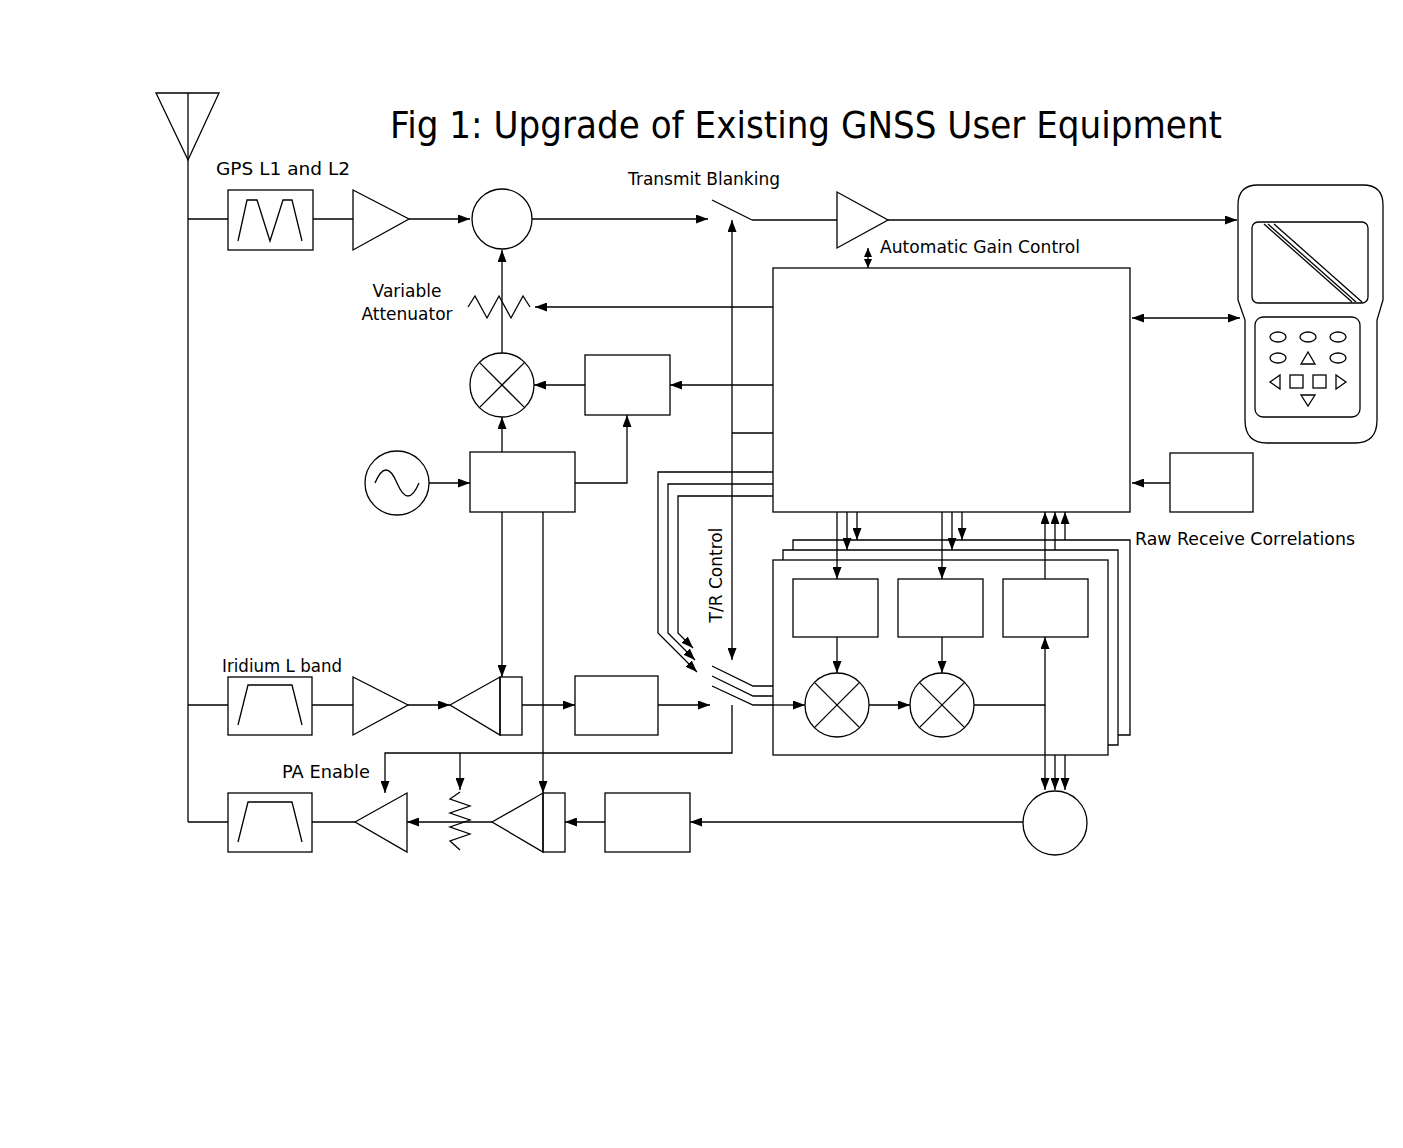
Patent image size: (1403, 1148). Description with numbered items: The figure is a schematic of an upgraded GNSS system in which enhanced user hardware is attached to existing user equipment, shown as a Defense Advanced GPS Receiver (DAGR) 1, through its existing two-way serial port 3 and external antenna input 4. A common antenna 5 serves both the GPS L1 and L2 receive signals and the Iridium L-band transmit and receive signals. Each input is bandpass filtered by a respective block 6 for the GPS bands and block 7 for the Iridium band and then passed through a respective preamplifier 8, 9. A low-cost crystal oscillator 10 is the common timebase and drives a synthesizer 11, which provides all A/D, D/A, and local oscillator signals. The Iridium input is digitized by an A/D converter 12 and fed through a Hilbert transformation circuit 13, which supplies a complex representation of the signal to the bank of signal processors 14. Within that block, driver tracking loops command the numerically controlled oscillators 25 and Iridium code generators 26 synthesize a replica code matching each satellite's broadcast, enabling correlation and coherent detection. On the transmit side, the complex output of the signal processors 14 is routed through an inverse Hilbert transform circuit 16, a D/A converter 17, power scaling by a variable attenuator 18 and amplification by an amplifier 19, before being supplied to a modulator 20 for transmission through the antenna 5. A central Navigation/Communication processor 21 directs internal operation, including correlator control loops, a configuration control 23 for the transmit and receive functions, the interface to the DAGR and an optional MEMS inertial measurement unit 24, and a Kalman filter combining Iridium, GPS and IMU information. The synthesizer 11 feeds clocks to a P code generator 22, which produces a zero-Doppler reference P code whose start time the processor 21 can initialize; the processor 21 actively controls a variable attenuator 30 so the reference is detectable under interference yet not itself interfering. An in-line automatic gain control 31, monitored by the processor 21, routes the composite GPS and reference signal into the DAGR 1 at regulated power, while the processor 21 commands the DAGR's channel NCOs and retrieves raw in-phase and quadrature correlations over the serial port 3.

The Defense Advanced GPS Receiver (DAGR) 1 is at (1310, 170).
The two-way serial port 3 is at (1237, 330).
The external antenna input 4 is at (1226, 210).
The common antenna 5 is at (208, 123).
The bandpass filter 6 is at (280, 238).
The bandpass filter 7 is at (258, 722).
The preamplifier 8 is at (375, 228).
The preamplifier 9 is at (375, 695).
The oscillator 10 is at (385, 462).
The synthesizer 11 is at (565, 490).
The A/D converter 12 is at (490, 695).
The Hilbert transformation processing function or circuit 13 is at (615, 685).
The bank of signal processors 14 is at (1033, 652).
The inverse Hilbert transform processing function or circuit 16 is at (672, 835).
The D/A converter 17 is at (555, 840).
The variable attenuator 18 is at (470, 805).
The amplifier 19 is at (385, 828).
The modulator 20 is at (268, 840).
The Navigation/Communication processor 21 is at (815, 288).
The P code generator 22 is at (648, 368).
The configuration control 23 is at (619, 576).
The micro-electromechanical-system (MEMS) Inertial Measurement Unit (IMU) 24 is at (1245, 473).
The numerically controlled oscillators (NCOs) 25 is at (842, 687).
The Iridium code generators 26 is at (947, 687).
The variable attenuator 30 is at (523, 300).
The in-line Automatic Gain Control (AGC) 31 is at (890, 200).